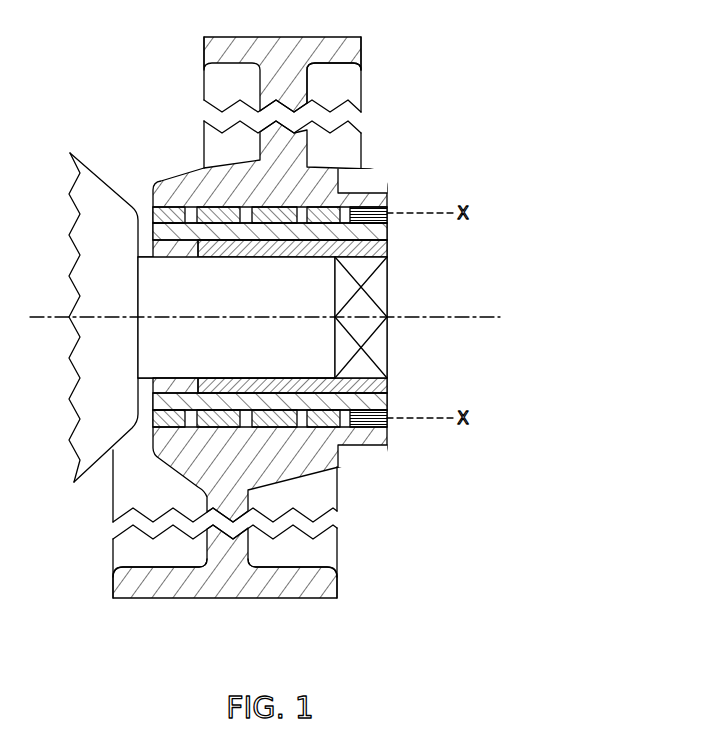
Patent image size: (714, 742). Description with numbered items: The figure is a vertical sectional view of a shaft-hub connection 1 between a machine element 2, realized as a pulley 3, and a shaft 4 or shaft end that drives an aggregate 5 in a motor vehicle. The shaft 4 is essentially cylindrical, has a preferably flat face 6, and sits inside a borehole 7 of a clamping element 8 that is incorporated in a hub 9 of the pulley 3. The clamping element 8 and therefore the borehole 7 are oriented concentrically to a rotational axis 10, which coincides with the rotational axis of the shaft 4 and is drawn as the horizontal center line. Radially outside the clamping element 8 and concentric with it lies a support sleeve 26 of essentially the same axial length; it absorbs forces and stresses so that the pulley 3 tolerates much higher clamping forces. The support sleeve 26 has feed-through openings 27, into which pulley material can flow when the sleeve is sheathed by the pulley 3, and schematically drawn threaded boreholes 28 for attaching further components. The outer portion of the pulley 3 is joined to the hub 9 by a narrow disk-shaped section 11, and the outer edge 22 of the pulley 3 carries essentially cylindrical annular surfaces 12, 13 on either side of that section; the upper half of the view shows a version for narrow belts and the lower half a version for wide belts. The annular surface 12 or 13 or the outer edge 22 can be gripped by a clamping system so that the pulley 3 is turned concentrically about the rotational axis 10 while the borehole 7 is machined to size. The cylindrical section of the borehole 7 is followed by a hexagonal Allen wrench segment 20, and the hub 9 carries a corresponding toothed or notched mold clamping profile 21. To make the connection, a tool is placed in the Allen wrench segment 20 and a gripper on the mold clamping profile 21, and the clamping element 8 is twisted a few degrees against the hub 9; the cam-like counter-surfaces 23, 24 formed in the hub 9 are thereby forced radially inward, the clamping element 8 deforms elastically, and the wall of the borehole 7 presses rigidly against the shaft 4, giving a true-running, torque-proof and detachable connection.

The shaft-hub connection 1 is at (534, 138).
The machine element 2 is at (494, 35).
The pulley 3 is at (328, 90).
The shaft 4 is at (222, 360).
The aggregate 5 is at (113, 203).
The face 6 is at (350, 343).
The borehole 7 is at (269, 378).
The clamping element 8 is at (388, 252).
The hub 9 is at (388, 226).
The rotational axis 10 is at (466, 317).
The disk-shaped section 11 is at (293, 95).
The annular surface 12 is at (140, 556).
The annular surface 13 is at (308, 556).
The Allen wrench segment 20 is at (388, 290).
The mold clamping profile 21 is at (293, 340).
The outer edge 22 is at (271, 598).
The counter-surface 23 is at (232, 429).
The counter-surface 24 is at (216, 199).
The support sleeve 26 is at (266, 321).
The feed-through openings 27 is at (246, 318).
The threaded boreholes 28 is at (388, 211).